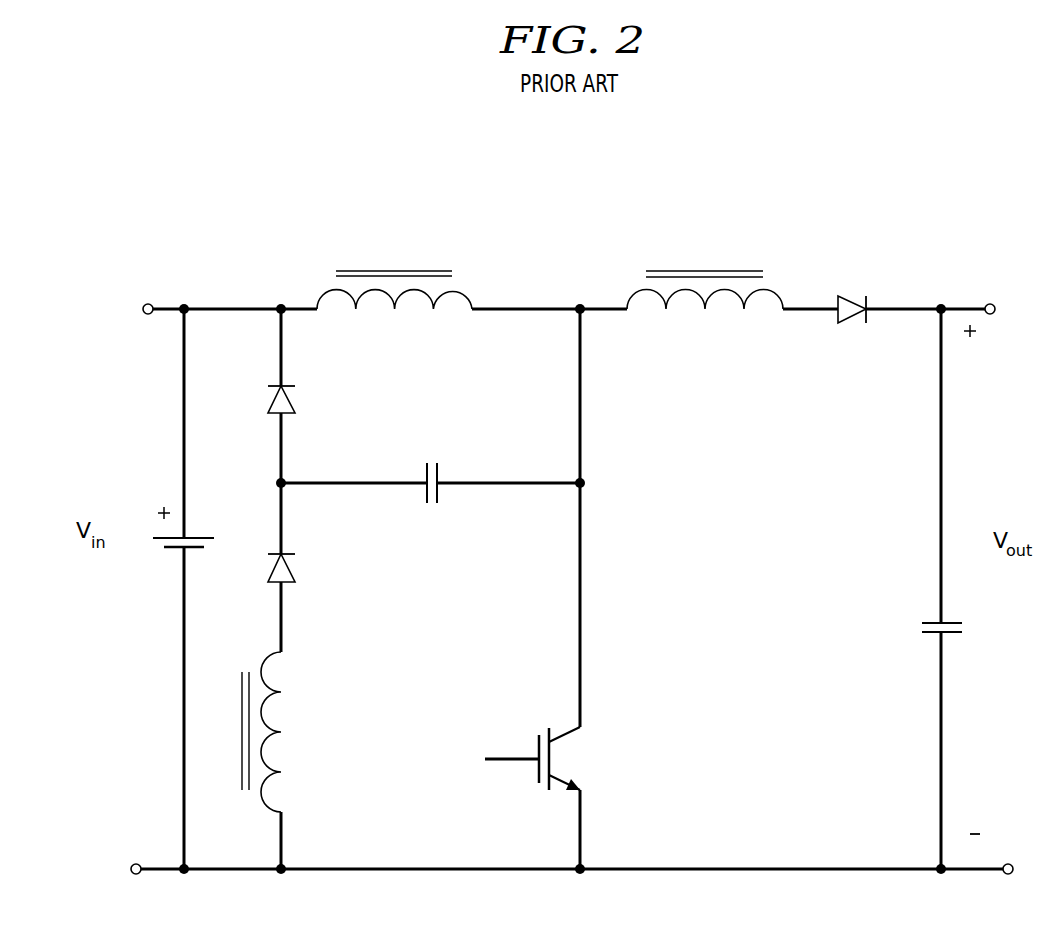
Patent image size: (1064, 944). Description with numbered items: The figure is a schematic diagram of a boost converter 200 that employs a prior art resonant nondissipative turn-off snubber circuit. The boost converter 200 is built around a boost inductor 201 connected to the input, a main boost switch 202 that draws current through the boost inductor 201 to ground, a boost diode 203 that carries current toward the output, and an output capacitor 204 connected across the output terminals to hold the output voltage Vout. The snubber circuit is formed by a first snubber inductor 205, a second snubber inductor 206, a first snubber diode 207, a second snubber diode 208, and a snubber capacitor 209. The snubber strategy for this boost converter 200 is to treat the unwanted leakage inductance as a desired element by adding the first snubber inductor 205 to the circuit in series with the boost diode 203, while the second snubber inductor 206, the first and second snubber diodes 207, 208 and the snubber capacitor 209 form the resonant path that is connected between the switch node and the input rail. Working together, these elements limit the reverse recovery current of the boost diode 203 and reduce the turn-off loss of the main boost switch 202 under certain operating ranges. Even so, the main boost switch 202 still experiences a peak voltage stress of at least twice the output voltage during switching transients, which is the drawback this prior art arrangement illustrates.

The boost converter 200 is at (778, 212).
The boost inductor 201 is at (393, 271).
The main boost switch 202 is at (538, 744).
The boost diode 203 is at (852, 297).
The output capacitor 204 is at (963, 628).
The first snubber inductor 205 is at (702, 270).
The second snubber inductor 206 is at (284, 712).
The first snubber diode 207 is at (291, 568).
The second snubber diode 208 is at (293, 401).
The snubber capacitor 209 is at (431, 505).